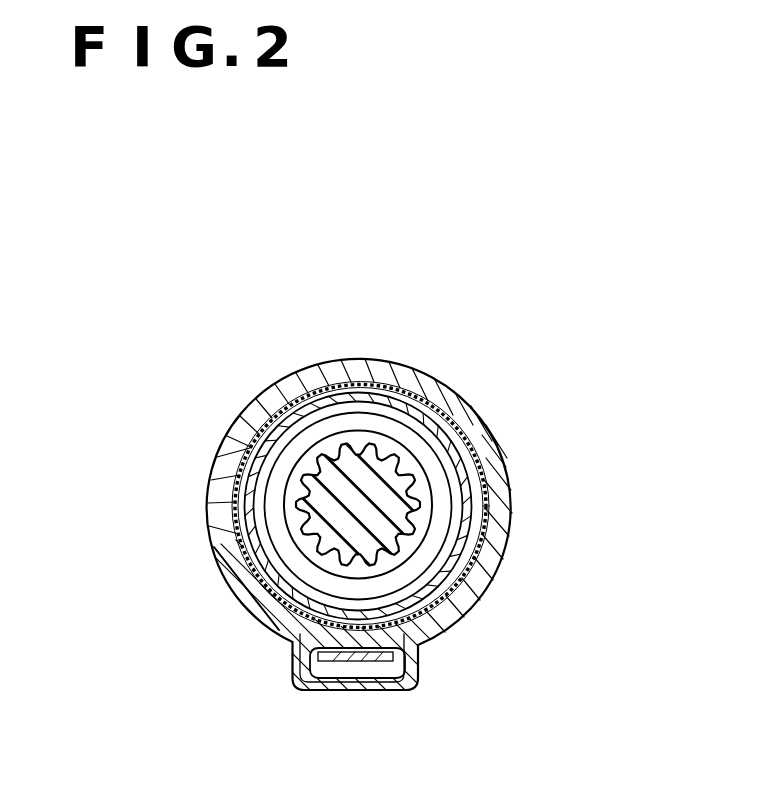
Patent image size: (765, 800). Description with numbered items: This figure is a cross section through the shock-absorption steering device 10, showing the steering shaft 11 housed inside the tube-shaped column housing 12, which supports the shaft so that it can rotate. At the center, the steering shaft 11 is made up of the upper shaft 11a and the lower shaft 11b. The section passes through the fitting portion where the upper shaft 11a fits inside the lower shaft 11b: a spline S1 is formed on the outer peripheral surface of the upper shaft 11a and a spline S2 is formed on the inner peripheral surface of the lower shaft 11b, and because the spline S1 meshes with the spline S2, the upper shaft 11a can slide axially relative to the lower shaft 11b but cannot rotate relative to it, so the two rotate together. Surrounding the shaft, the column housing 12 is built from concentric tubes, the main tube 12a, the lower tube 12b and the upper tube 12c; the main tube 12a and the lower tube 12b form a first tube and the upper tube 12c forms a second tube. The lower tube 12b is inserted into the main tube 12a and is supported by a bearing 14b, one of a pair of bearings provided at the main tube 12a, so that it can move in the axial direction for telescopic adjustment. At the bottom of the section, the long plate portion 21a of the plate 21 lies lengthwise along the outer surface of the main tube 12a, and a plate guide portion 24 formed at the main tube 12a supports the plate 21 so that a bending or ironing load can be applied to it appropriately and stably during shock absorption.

The steering device 10 is at (246, 252).
The column housing 12 is at (296, 502).
The main tube 12a is at (353, 370).
The lower tube 12b is at (242, 505).
The upper tube 12c is at (228, 572).
The steering shaft 11 is at (436, 476).
The upper shaft 11a is at (425, 415).
The lower shaft 11b is at (405, 543).
The bearing 14b is at (234, 421).
The spline S1 is at (369, 470).
The spline S2 is at (405, 543).
The plate 21 is at (367, 693).
The long plate portion 21a is at (340, 691).
The plate guide portion 24 is at (424, 683).